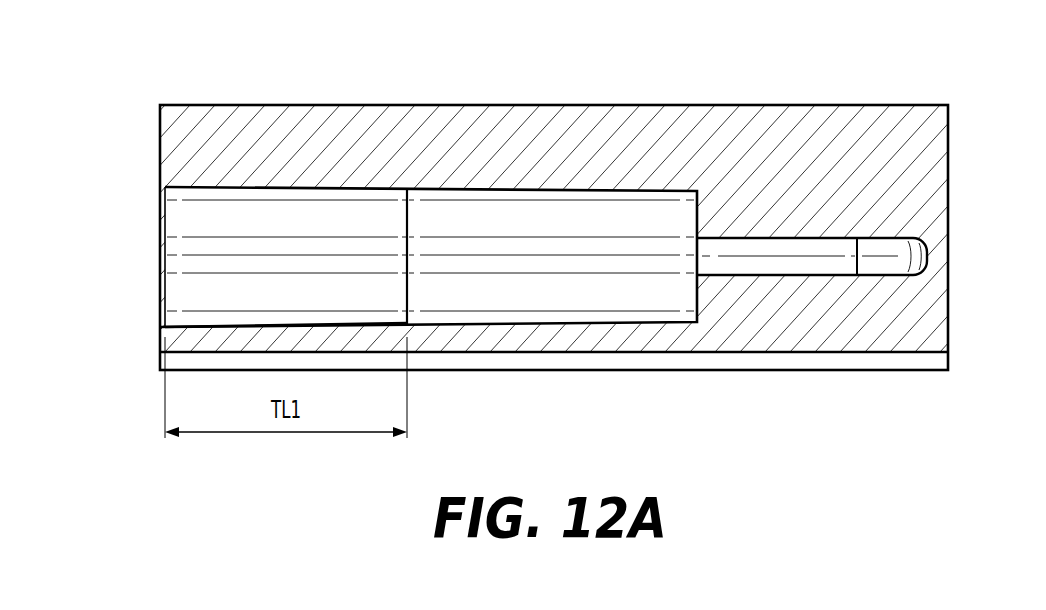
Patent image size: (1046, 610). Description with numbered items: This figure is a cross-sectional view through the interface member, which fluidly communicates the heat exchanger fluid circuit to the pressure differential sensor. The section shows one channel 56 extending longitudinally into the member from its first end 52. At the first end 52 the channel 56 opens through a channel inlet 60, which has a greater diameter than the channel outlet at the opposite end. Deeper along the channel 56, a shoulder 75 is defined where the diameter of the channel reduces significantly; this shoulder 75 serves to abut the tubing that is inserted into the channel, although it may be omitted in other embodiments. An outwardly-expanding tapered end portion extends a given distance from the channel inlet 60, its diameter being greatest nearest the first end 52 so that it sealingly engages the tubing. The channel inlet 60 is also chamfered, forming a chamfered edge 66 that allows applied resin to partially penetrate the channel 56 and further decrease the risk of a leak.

The first end 52 is at (160, 147).
The channel 56 is at (548, 190).
The shoulder 75 is at (699, 212).
The chamfered edge 66 is at (162, 188).
The channel inlet 60 is at (160, 304).